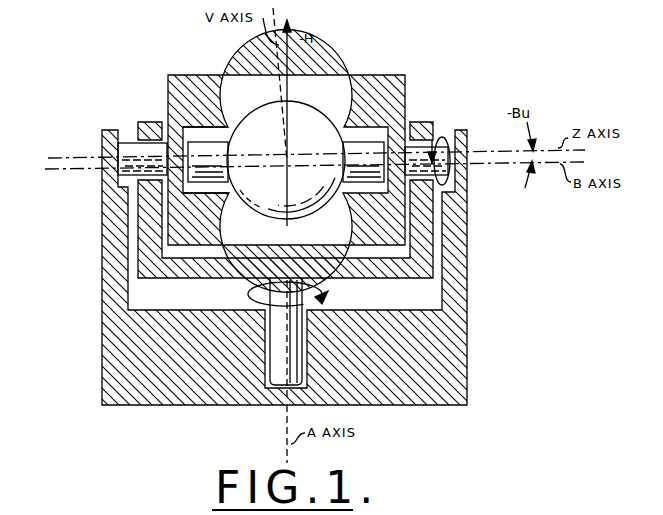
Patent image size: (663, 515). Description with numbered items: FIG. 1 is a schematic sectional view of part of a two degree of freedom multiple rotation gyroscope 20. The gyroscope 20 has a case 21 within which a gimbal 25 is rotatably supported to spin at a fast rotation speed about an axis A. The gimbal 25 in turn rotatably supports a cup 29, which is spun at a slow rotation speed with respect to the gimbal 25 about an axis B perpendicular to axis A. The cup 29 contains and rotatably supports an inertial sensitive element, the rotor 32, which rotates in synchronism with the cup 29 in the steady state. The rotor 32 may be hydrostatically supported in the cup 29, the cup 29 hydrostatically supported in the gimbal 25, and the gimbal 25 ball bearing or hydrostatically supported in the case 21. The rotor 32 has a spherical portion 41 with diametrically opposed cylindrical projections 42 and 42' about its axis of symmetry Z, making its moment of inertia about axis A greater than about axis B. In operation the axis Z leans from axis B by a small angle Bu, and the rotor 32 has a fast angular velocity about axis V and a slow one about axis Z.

The multiple rotation gyroscope 20 is at (98, 112).
The case 21 is at (468, 285).
The gimbal 25 is at (182, 280).
The cup 29 is at (383, 76).
The rotor 32 is at (222, 128).
The spherical portion 41 is at (300, 97).
The cylindrical projection 42 is at (179, 135).
The cylindrical projection 42' is at (395, 137).